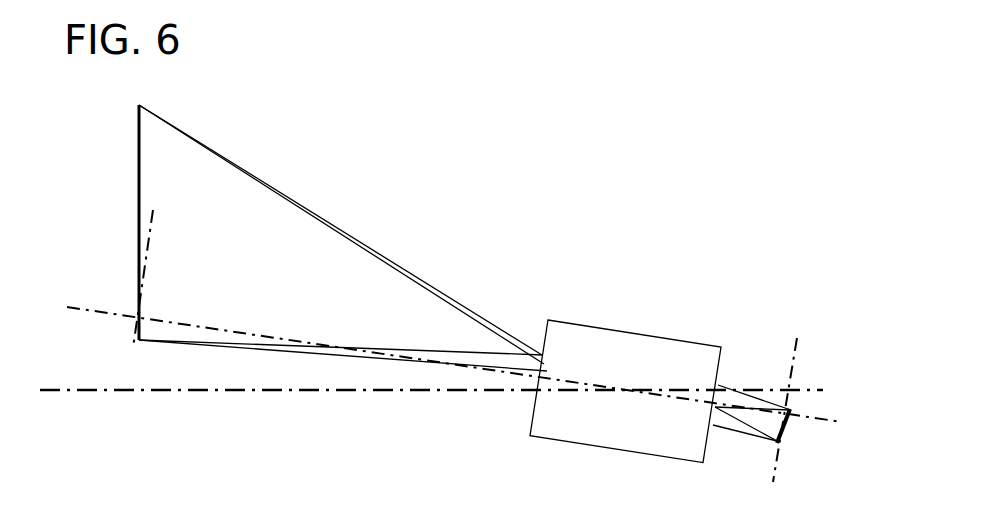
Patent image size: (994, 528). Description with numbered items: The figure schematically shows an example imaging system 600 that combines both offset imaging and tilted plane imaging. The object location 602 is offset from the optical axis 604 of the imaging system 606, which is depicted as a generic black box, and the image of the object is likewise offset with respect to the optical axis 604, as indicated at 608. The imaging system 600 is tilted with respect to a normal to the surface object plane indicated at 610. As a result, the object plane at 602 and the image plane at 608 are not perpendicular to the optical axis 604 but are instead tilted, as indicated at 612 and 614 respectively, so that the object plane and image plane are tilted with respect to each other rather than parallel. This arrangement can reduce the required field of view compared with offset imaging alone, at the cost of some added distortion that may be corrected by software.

The imaging system 600 is at (492, 121).
The object location 602 is at (153, 152).
The optical axis 604 is at (480, 372).
The imaging system 606 is at (572, 321).
The image of the object 608 is at (795, 423).
The normal to the surface object plane 610 is at (152, 394).
The tilt of the object plane 612 is at (163, 262).
The tilt of the image plane 614 is at (802, 367).